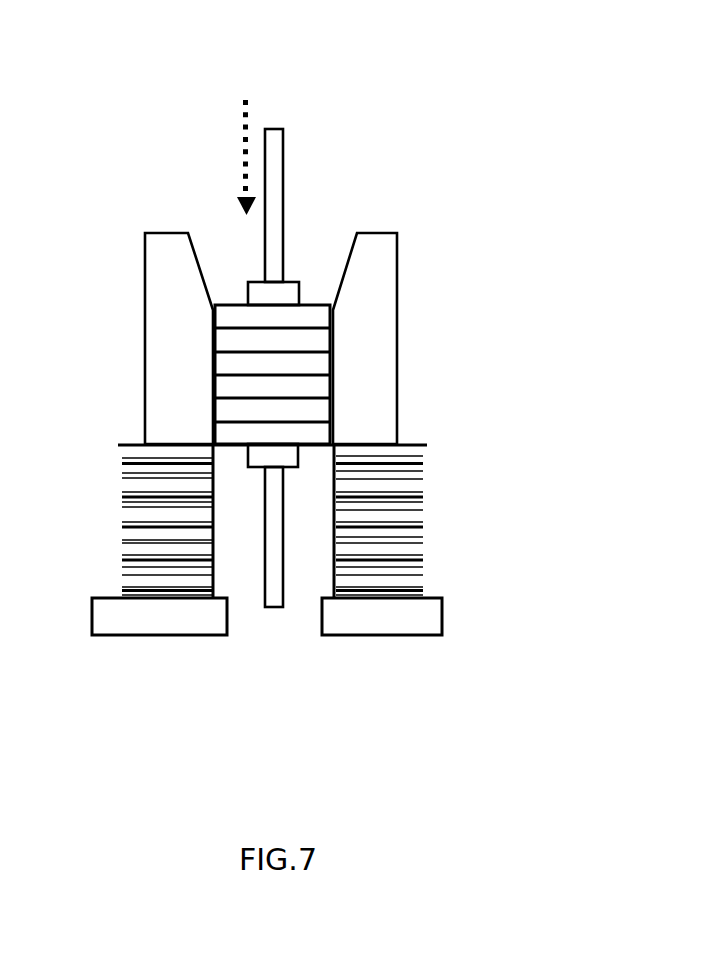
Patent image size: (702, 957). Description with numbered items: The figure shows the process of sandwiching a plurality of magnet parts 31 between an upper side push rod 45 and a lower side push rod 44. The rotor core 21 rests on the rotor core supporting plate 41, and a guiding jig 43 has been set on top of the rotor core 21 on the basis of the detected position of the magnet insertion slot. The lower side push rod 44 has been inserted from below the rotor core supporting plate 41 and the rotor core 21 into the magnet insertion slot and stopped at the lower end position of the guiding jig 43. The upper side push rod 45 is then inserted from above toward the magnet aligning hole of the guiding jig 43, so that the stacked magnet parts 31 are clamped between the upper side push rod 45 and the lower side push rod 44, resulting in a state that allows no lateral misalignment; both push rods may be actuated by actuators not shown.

The rotor core 21 is at (123, 538).
The magnet parts 31 is at (312, 303).
The rotor core supporting plate 41 is at (442, 615).
The guiding jig 43 is at (145, 290).
The lower side push rod 44 is at (282, 582).
The upper side push rod 45 is at (283, 145).